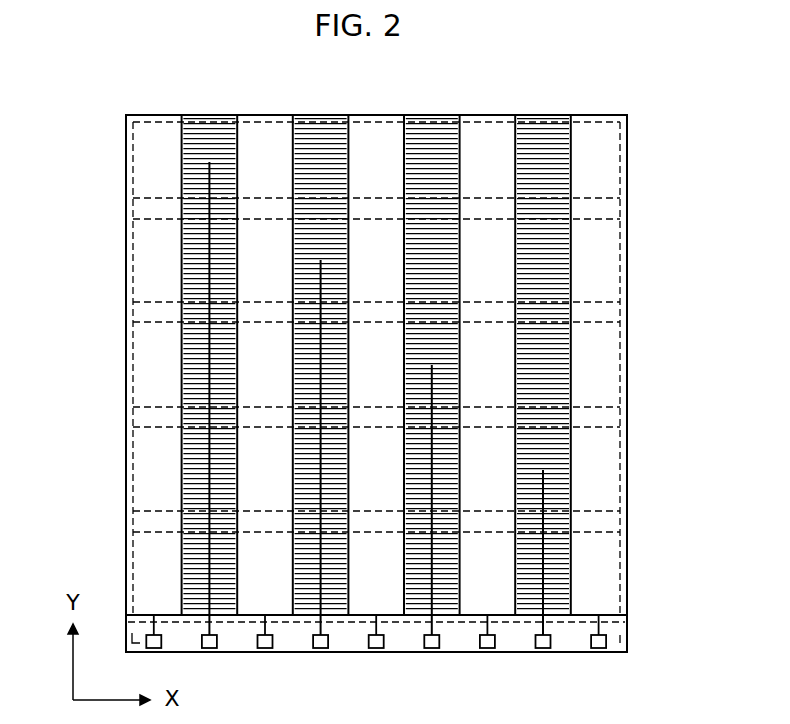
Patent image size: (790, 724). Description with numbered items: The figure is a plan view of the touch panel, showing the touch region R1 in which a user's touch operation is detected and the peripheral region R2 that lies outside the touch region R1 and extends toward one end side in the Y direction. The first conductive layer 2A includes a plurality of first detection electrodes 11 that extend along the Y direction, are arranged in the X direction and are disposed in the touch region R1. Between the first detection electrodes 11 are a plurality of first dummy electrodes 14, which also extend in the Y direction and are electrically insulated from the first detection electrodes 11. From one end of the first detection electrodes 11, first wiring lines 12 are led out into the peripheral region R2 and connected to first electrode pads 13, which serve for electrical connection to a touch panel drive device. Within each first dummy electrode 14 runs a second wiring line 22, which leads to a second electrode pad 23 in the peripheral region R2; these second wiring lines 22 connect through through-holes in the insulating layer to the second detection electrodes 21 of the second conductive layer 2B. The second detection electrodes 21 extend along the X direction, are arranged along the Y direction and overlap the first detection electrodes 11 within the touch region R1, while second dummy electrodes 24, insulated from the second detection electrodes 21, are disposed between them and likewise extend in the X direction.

The first detection electrode 11 is at (594, 148).
The first wiring line 12 is at (603, 627).
The first electrode pad 13 is at (600, 652).
The first dummy electrode 14 is at (538, 143).
The second detection electrode 21 is at (120, 163).
The second wiring line 22 is at (209, 272).
The second electrode pad 23 is at (432, 655).
The second dummy electrode 24 is at (120, 312).
The touch region R1 is at (598, 263).
The peripheral region R2 is at (350, 656).
The first conductive layer 2A is at (598, 370).
The second conductive layer 2B is at (598, 472).